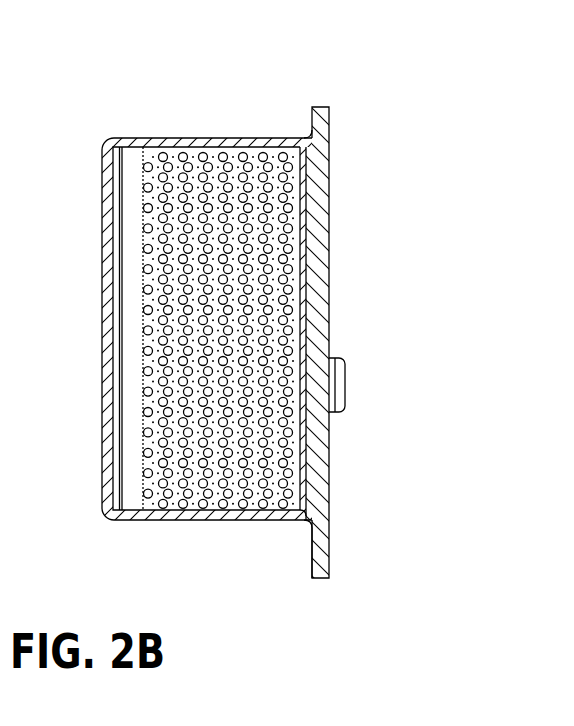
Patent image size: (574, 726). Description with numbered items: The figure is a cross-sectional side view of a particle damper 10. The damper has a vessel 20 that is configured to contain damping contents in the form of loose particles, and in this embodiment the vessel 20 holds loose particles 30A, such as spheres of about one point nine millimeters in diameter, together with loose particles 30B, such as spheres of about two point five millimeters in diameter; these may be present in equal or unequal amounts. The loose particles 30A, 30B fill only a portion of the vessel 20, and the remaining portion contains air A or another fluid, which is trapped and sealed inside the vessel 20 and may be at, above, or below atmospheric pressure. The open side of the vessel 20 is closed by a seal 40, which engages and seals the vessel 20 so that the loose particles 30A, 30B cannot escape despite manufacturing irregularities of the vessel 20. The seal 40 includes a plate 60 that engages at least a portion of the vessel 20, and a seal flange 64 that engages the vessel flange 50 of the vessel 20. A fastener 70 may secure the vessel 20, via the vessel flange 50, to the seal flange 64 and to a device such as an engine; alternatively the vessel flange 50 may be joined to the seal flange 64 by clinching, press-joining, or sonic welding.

The particle damper 10 is at (352, 90).
The vessel 20 is at (100, 306).
The loose particles 30A is at (178, 165).
The loose particles 30B is at (244, 158).
The seal 40 is at (337, 306).
The vessel flange 50 is at (306, 549).
The plate 60 is at (309, 220).
The seal flange 64 is at (336, 527).
The fastener 70 is at (348, 392).
The air A is at (136, 399).